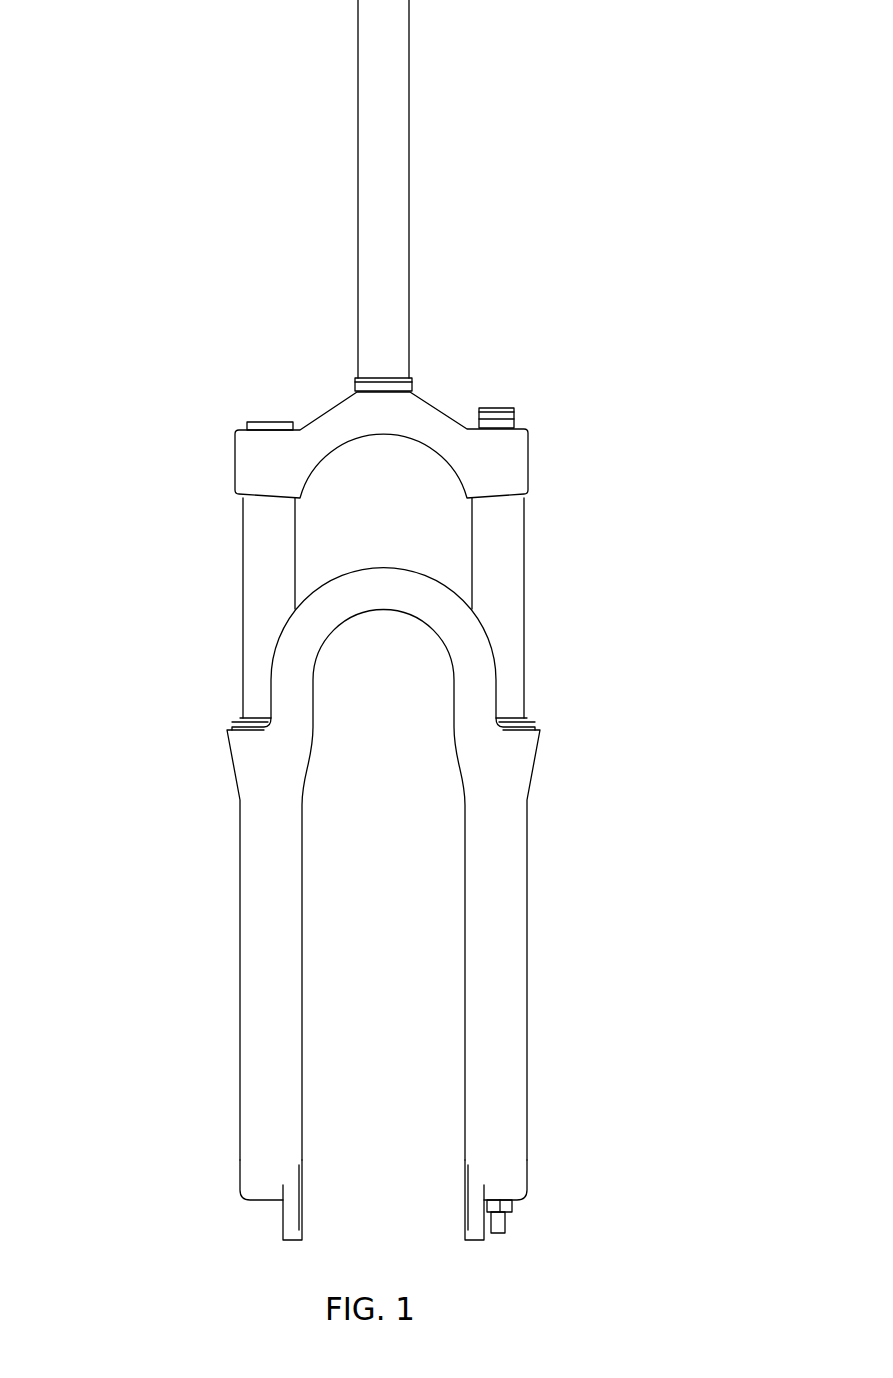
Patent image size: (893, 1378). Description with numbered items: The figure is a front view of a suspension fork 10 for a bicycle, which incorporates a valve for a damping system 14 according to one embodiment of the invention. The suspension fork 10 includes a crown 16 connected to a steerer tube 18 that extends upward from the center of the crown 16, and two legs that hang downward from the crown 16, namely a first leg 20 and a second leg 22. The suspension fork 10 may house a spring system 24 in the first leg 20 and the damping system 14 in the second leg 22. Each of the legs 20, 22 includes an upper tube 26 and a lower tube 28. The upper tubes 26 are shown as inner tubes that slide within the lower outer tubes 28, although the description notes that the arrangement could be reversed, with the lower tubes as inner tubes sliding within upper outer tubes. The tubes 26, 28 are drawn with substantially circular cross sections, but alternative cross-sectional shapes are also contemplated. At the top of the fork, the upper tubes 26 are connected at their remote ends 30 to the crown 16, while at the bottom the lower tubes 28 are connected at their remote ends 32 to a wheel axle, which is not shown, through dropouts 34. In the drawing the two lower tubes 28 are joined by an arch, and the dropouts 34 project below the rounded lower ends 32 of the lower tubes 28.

The suspension fork 10 is at (173, 350).
The damping system 14 is at (236, 553).
The crown 16 is at (425, 410).
The steerer tube 18 is at (388, 228).
The first leg 20 is at (553, 652).
The second leg 22 is at (236, 668).
The spring system 24 is at (553, 505).
The upper tube 26 is at (384, 566).
The lower tube 28 is at (280, 917).
The remote ends 30 is at (229, 468).
The remote ends 32 is at (258, 1183).
The dropouts 34 is at (480, 1215).